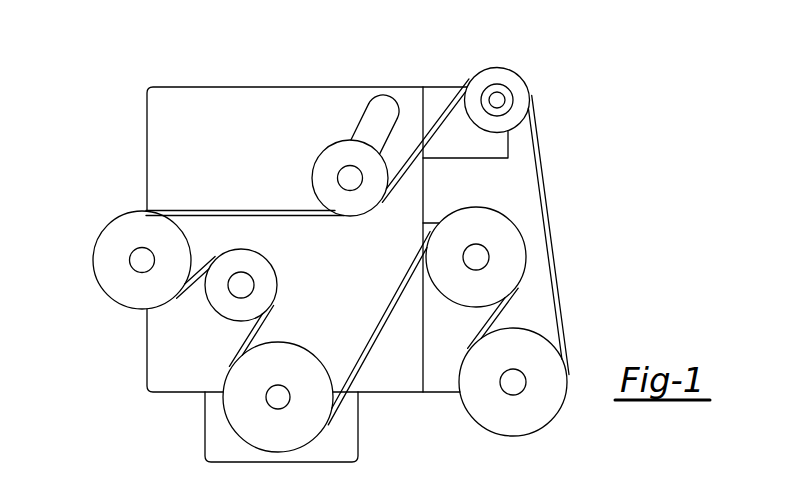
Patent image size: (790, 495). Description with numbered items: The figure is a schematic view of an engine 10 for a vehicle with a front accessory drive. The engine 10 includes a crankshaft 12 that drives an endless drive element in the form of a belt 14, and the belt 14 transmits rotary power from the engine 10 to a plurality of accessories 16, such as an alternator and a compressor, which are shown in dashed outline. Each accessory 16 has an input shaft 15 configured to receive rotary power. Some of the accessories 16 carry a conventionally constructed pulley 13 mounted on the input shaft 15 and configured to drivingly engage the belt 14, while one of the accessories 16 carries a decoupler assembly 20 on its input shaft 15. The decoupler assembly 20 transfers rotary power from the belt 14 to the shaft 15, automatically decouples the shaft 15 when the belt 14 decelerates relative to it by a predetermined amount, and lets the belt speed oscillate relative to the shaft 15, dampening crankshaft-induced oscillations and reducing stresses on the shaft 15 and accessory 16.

The engine 10 is at (147, 79).
The crankshaft 12 is at (273, 398).
The pulley 13 is at (122, 293).
The belt 14 is at (371, 348).
The input shaft 15 is at (139, 256).
The accessory 16 is at (102, 248).
The decoupler assembly 20 is at (517, 107).